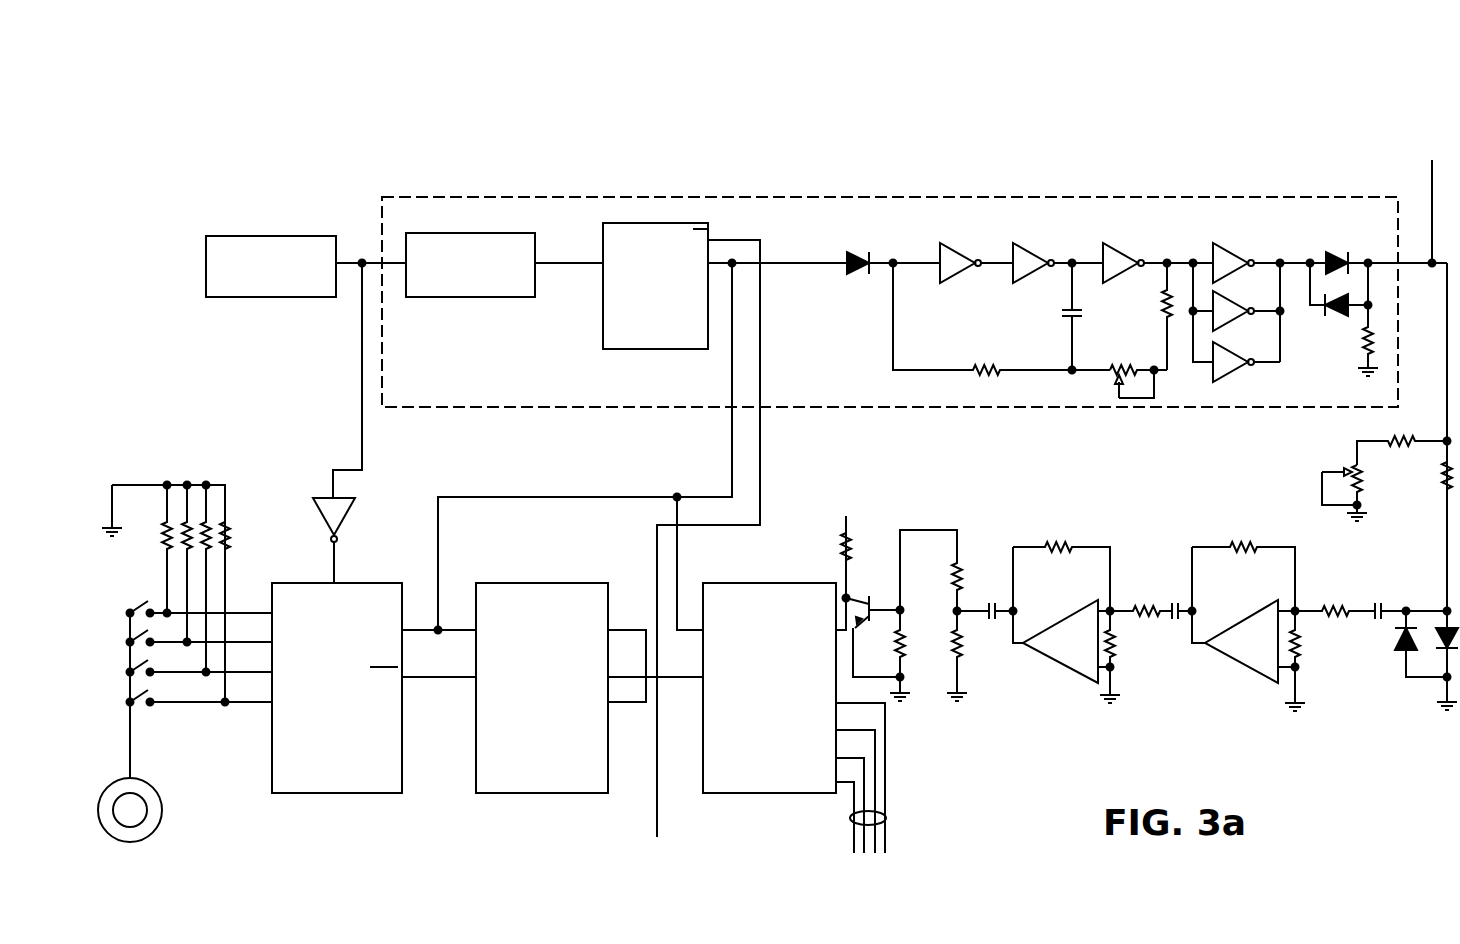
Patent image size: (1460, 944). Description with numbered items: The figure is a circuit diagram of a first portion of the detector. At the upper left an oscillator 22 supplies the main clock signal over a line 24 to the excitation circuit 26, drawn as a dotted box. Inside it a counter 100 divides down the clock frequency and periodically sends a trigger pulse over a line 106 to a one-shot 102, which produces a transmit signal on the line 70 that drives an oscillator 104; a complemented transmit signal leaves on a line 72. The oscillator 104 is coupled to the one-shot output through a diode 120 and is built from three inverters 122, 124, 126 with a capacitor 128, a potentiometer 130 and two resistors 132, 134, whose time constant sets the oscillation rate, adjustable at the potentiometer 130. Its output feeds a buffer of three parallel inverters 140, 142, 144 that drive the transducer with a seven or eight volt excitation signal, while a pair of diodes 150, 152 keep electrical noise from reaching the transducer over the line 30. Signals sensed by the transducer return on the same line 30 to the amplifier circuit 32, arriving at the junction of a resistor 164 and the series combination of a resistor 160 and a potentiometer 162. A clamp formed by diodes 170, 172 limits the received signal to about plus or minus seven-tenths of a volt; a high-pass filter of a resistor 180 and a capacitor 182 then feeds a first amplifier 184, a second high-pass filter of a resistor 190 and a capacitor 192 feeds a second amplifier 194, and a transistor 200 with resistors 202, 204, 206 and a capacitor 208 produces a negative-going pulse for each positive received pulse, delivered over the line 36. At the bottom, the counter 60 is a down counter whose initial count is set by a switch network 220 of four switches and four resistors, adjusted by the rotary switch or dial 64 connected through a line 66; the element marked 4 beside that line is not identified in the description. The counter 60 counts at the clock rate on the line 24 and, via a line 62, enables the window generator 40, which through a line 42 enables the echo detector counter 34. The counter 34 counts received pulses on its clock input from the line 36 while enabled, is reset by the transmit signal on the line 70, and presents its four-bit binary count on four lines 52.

The transducer 4 is at (118, 764).
The oscillator 22 is at (270, 297).
The line 24 is at (348, 260).
The excitation circuit 26 is at (897, 196).
The line 30 is at (1446, 342).
The amplifier circuit 32 is at (1024, 482).
The echo detector counter 34 is at (763, 793).
The line 36 is at (845, 575).
The window generator 40 is at (540, 793).
The line 42 is at (688, 680).
The four lines 52 is at (887, 817).
The counter 60 is at (340, 793).
The line 62 is at (444, 680).
The rotary switch or dial 64 is at (140, 836).
The line 66 is at (130, 765).
The line 70 is at (731, 474).
The line 72 is at (762, 506).
The counter 100 is at (470, 297).
The one-shot 102 is at (660, 349).
The oscillator 104 is at (849, 365).
The line 106 is at (572, 265).
The diode 120 is at (860, 258).
The inverter 122 is at (944, 244).
The inverter 124 is at (1022, 244).
The inverter 126 is at (1107, 244).
The capacitor 128 is at (1068, 316).
The potentiometer 130 is at (1111, 377).
The resistor 132 is at (986, 372).
The resistor 134 is at (1161, 313).
The inverter 140 is at (1218, 244).
The inverter 142 is at (1230, 321).
The inverter 144 is at (1236, 372).
The diode 150 is at (1334, 248).
The diode 152 is at (1340, 319).
The resistor 160 is at (1392, 441).
The potentiometer 162 is at (1364, 477).
The resistor 164 is at (1442, 481).
The diode 170 is at (1398, 640).
The diode 172 is at (1450, 602).
The resistor 180 is at (1341, 609).
The capacitor 182 is at (1386, 600).
The amplifier 184 is at (1254, 668).
The resistor 190 is at (1138, 606).
The capacitor 192 is at (1178, 620).
The amplifier 194 is at (1064, 668).
The transistor 200 is at (868, 595).
The resistor 202 is at (905, 647).
The resistor 204 is at (962, 567).
The resistor 206 is at (962, 654).
The capacitor 208 is at (990, 600).
The switch network 220 is at (109, 596).